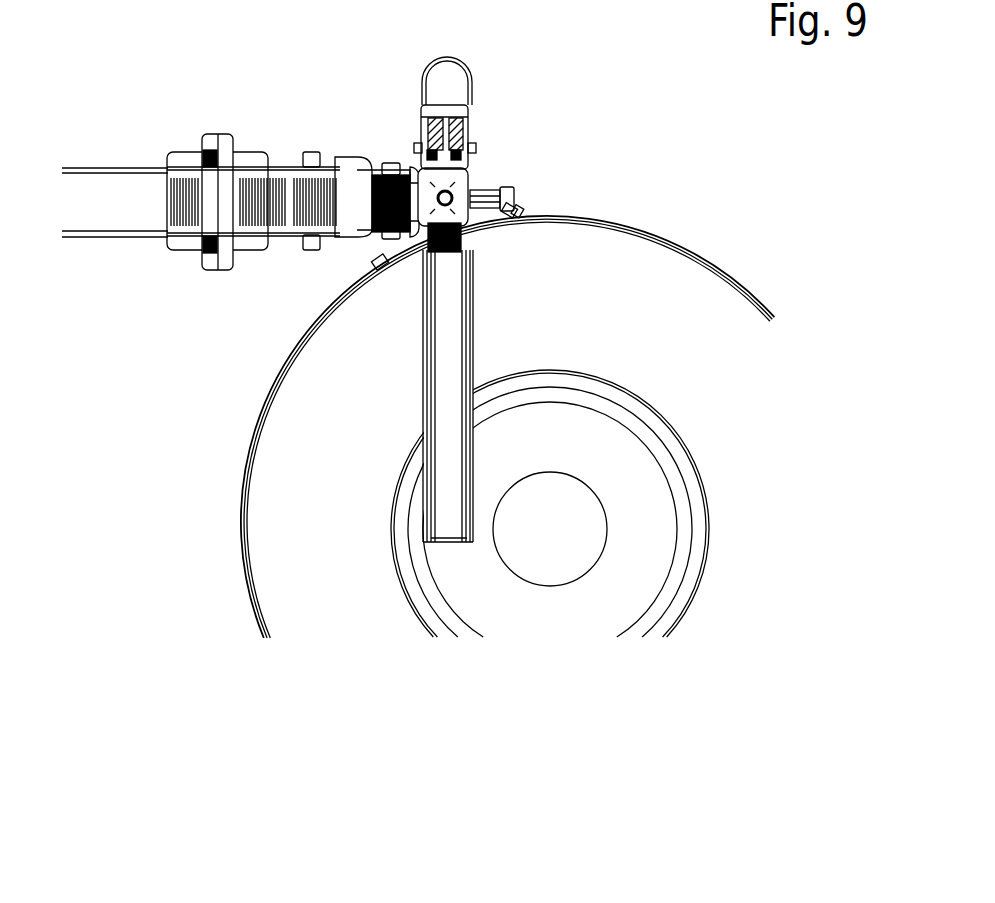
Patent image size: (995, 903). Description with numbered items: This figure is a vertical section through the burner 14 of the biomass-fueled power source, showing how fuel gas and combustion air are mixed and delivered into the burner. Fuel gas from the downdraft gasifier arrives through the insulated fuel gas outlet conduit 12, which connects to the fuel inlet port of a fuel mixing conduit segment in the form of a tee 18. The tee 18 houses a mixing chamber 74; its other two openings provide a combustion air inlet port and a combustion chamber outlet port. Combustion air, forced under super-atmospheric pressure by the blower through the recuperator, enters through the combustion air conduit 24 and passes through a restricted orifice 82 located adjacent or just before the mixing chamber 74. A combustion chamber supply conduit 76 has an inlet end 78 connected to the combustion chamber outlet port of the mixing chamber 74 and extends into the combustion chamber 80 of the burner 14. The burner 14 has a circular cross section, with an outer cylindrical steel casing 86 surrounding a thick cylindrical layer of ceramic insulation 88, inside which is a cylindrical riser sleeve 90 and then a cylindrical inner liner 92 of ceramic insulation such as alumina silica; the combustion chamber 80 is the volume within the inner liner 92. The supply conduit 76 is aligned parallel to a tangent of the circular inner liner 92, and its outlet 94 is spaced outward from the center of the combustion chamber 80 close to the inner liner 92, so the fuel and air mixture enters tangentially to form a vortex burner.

The fuel gas outlet conduit 12 is at (105, 165).
The burner 14 is at (245, 452).
The tee 18 is at (410, 155).
The combustion air conduit 24 is at (462, 68).
The mixing chamber 74 is at (455, 186).
The combustion chamber supply conduit 76 is at (480, 330).
The inlet end 78 is at (465, 240).
The combustion chamber 80 is at (650, 470).
The restricted orifice 82 is at (445, 135).
The outer cylindrical steel casing 86 is at (285, 372).
The ceramic insulation 88 is at (695, 325).
The cylindrical riser sleeve 90 is at (705, 520).
The inner liner 92 is at (690, 543).
The outlet 94 is at (450, 544).